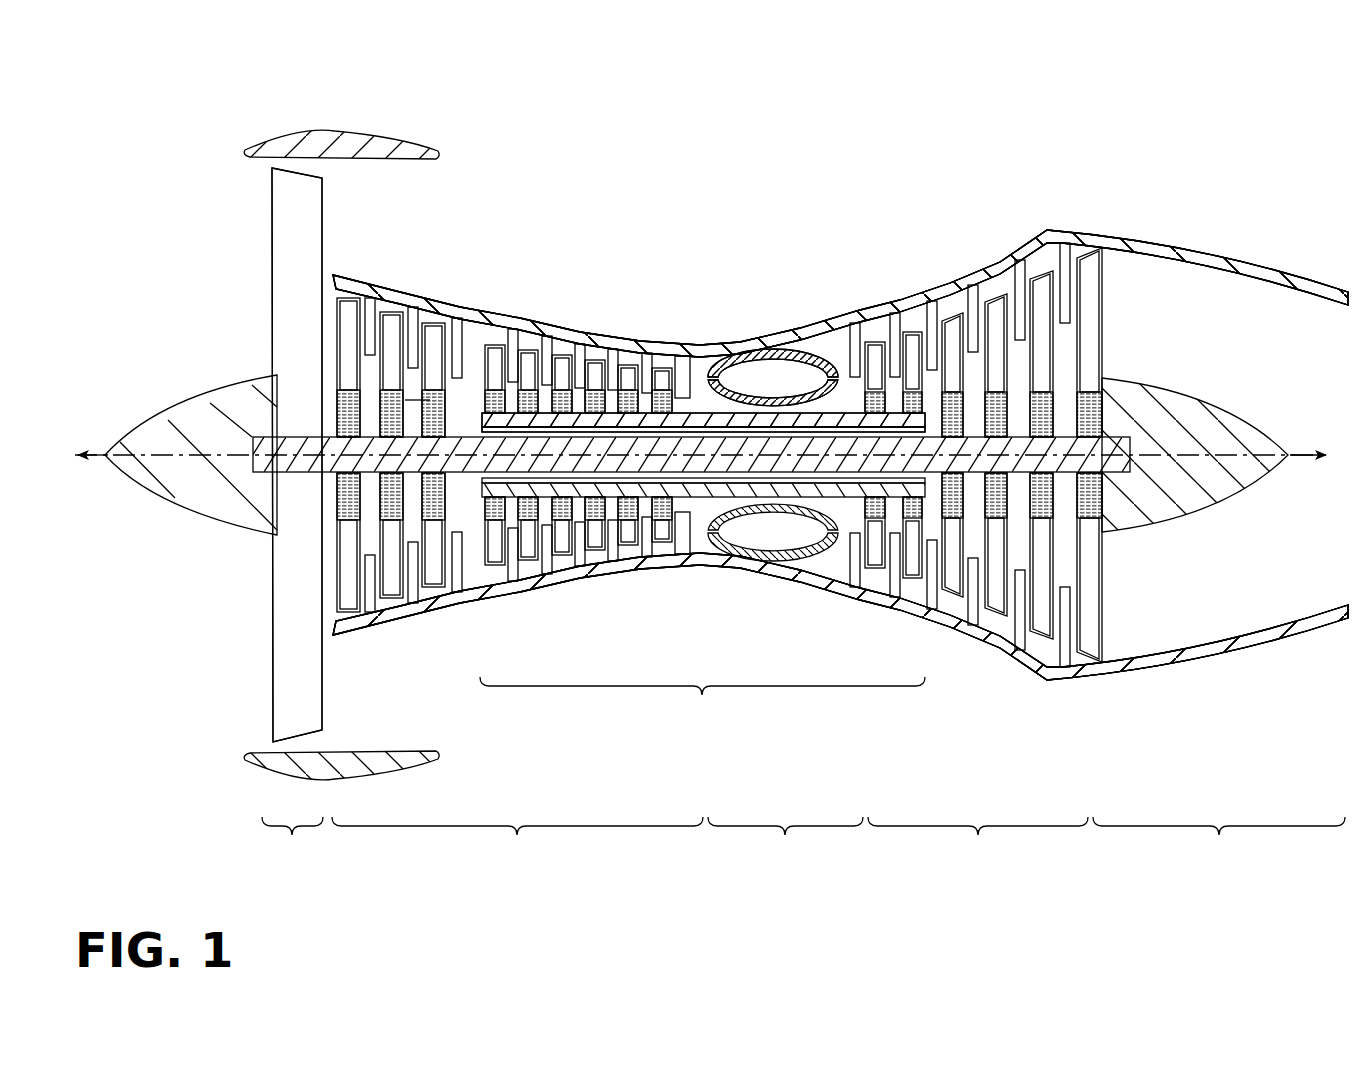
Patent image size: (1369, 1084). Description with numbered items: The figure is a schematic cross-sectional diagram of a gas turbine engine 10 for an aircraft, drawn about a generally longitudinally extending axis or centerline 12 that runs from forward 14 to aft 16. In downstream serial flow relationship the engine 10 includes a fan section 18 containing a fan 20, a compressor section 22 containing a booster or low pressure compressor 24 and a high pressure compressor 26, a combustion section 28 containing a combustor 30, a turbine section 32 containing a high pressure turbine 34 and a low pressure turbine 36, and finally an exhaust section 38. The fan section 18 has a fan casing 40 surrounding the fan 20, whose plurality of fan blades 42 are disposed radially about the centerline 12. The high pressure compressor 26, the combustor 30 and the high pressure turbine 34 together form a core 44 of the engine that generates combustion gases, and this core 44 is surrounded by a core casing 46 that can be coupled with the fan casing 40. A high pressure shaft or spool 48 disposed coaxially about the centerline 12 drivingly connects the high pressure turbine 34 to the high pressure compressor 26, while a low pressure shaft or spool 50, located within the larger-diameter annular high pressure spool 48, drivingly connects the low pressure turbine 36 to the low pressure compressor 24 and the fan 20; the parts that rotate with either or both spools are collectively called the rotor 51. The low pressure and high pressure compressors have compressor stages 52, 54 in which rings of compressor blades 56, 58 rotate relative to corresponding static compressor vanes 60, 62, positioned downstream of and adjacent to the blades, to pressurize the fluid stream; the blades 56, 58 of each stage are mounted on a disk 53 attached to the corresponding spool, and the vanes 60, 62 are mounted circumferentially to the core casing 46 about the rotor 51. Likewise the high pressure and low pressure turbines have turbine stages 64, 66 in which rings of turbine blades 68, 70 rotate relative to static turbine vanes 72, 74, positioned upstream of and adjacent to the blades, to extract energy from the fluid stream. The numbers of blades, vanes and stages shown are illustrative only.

The gas turbine engine 10 is at (129, 63).
The centerline 12 is at (168, 452).
The forward direction 14 is at (74, 455).
The aft direction 16 is at (1326, 455).
The fan section 18 is at (292, 842).
The fan 20 is at (262, 236).
The compressor section 22 is at (517, 842).
The low pressure compressor 24 is at (470, 606).
The high pressure compressor 26 is at (638, 579).
The combustion section 28 is at (785, 842).
The combustor 30 is at (830, 350).
The turbine section 32 is at (978, 842).
The high pressure turbine 34 is at (848, 606).
The low pressure turbine 36 is at (983, 646).
The exhaust section 38 is at (1219, 842).
The fan casing 40 is at (345, 130).
The fan blades 42 is at (284, 682).
The core 44 is at (702, 700).
The core casing 46 is at (752, 338).
The high pressure spool 48 is at (693, 412).
The low pressure spool 50 is at (462, 428).
The rotor 51 is at (622, 430).
The compressor stages of the LP compressor 52 is at (397, 393).
The disk 53 is at (415, 405).
The compressor stages of the HP compressor 54 is at (587, 390).
The compressor blades of the LP compressor 56 is at (350, 302).
The compressor blades of the HP compressor 58 is at (500, 352).
The static compressor vanes of the LP compressor 60 is at (370, 330).
The static compressor vanes of the HP compressor 62 is at (513, 382).
The turbine stages of the HP turbine 64 is at (884, 384).
The turbine stages of the LP turbine 66 is at (1014, 394).
The turbine blades of the HP turbine 68 is at (912, 345).
The turbine blades of the LP turbine 70 is at (1040, 297).
The static turbine vanes of the HP turbine 72 is at (898, 330).
The static turbine vanes of the LP turbine 74 is at (1022, 262).